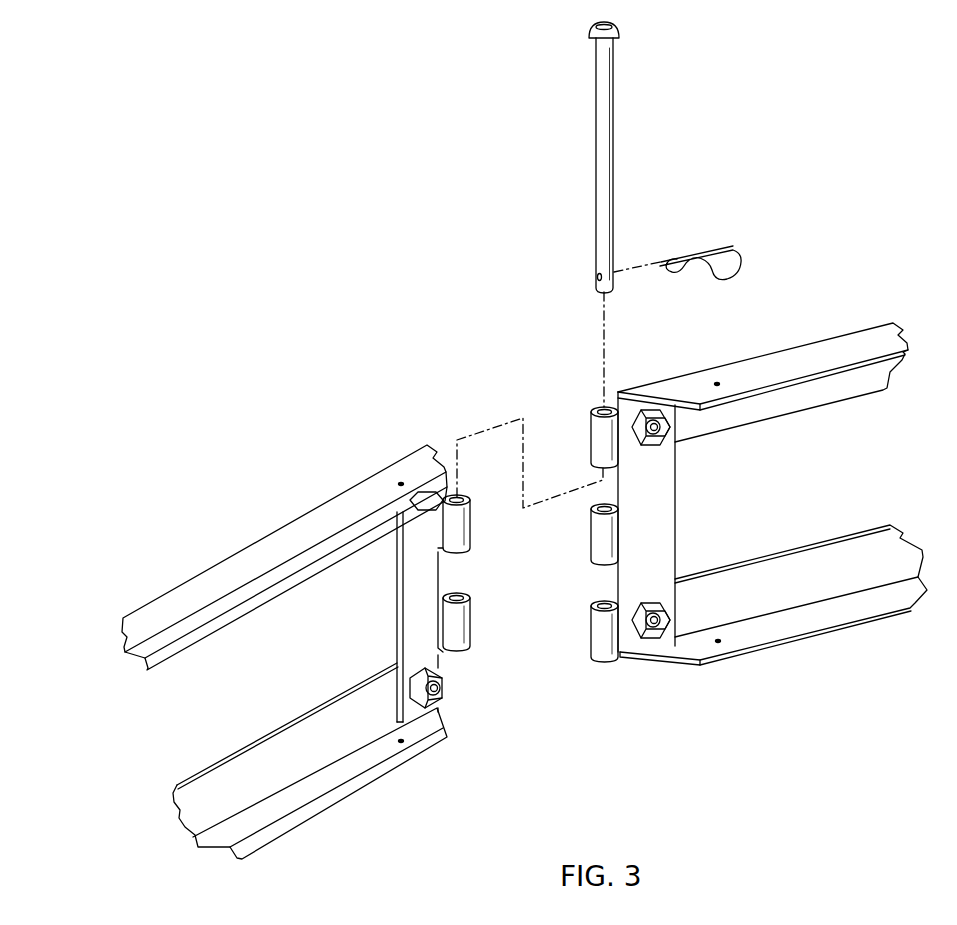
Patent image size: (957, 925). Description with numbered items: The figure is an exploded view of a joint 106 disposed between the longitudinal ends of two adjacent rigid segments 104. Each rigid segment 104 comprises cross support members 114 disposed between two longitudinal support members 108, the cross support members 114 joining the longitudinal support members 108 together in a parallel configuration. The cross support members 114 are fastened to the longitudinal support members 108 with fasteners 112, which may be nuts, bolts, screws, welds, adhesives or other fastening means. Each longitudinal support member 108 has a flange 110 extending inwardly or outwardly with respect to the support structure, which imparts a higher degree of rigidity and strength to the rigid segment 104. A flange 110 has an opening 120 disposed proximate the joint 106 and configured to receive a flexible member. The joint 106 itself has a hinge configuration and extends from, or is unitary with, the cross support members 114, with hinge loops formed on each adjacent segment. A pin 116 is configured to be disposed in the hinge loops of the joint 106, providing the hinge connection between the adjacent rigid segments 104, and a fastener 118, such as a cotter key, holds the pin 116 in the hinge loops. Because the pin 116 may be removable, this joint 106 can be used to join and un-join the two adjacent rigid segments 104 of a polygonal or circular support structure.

The rigid segment 104 is at (265, 556).
The joint 106 is at (595, 435).
The longitudinal support member 108 is at (763, 382).
The flange 110 is at (773, 595).
The fastener 112 is at (445, 688).
The cross support member 114 is at (655, 523).
The pin 116 is at (602, 168).
The fastener 118 is at (737, 258).
The opening 120 is at (718, 645).